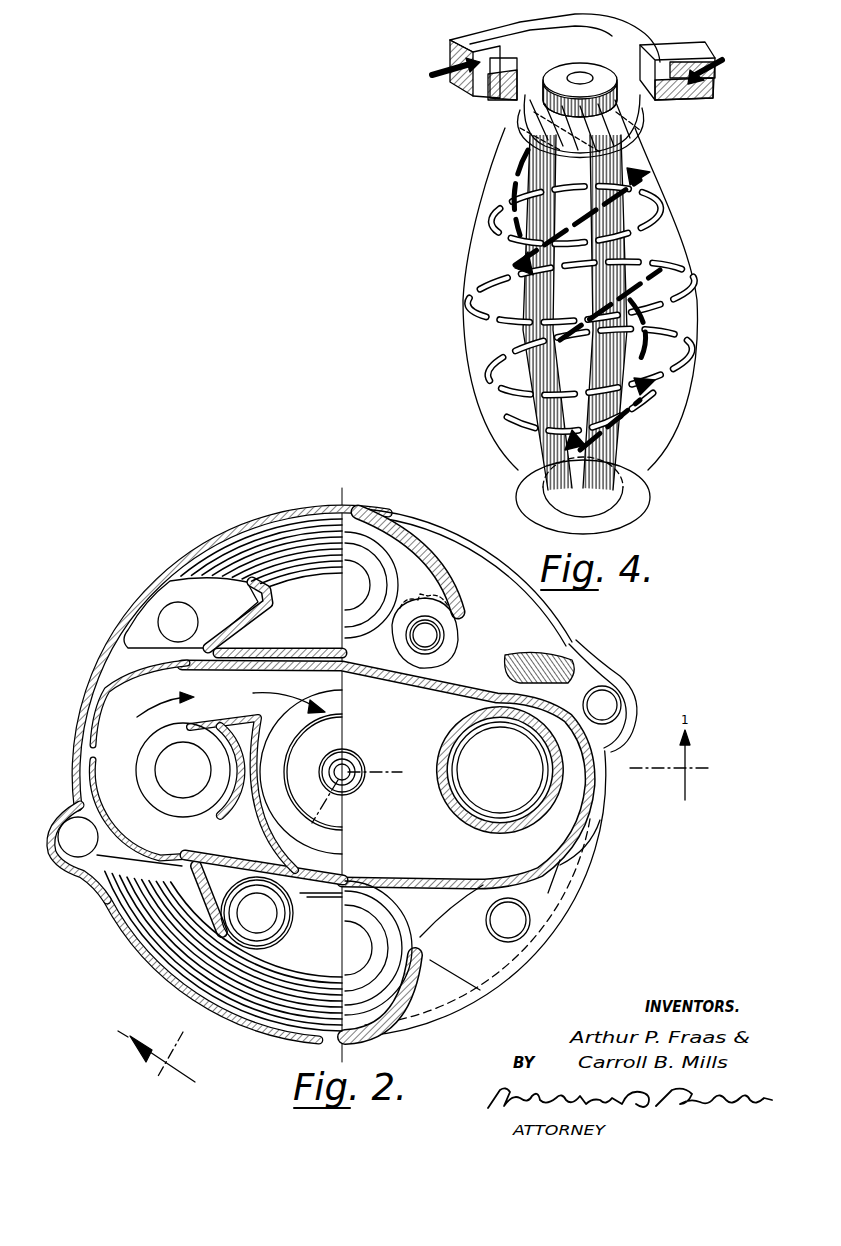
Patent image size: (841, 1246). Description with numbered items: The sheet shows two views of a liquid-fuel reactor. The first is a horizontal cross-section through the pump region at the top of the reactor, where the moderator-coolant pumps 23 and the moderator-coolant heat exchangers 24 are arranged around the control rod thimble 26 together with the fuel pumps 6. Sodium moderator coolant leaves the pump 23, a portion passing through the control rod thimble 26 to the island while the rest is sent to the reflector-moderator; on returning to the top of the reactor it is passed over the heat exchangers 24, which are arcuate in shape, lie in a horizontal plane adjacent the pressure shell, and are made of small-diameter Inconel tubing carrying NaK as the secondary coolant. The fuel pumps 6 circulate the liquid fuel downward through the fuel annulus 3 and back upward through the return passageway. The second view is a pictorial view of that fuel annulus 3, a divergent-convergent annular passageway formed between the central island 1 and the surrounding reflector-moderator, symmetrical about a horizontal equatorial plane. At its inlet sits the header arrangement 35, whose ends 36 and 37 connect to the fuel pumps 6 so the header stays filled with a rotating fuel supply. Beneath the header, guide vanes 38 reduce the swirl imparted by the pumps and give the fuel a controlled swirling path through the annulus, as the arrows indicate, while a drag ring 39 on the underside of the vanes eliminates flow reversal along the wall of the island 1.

In FIG. 4, the central island 1 is at (586, 298).
In FIG. 4, the annular fuel passageway 3 is at (662, 256).
In FIG. 2, the fuel pump 6 is at (163, 763).
In FIG. 2, the moderator-coolant pump 23 is at (363, 563).
In FIG. 2, the moderator-coolant heat exchanger 24 is at (278, 545).
In FIG. 2, the control rod thimble 26 is at (354, 765).
In FIG. 4, the inlet header 35 is at (606, 38).
In FIG. 4, the end of inlet header 36 is at (478, 86).
In FIG. 4, the end of inlet header 37 is at (710, 78).
In FIG. 4, the guide vanes 38 is at (530, 136).
In FIG. 4, the drag ring 39 is at (630, 136).